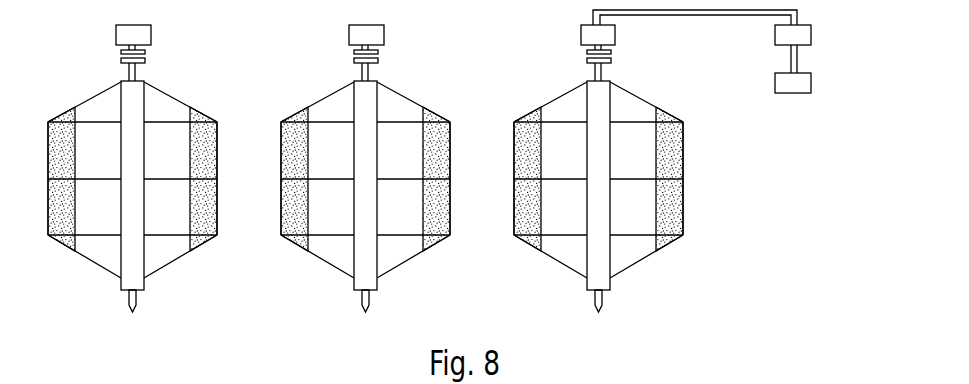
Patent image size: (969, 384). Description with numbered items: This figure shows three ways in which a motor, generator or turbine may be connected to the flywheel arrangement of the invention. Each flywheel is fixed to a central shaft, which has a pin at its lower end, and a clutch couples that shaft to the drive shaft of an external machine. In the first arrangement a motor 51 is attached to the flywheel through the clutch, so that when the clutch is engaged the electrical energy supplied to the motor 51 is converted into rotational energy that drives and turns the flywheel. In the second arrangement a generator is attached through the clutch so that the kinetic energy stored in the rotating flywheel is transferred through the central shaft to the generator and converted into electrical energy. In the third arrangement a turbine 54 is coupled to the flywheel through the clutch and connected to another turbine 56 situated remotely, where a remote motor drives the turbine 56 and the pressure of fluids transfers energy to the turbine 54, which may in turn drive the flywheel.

The motor 51 is at (151, 33).
The turbine 54 is at (615, 35).
The turbine 56 is at (811, 33).